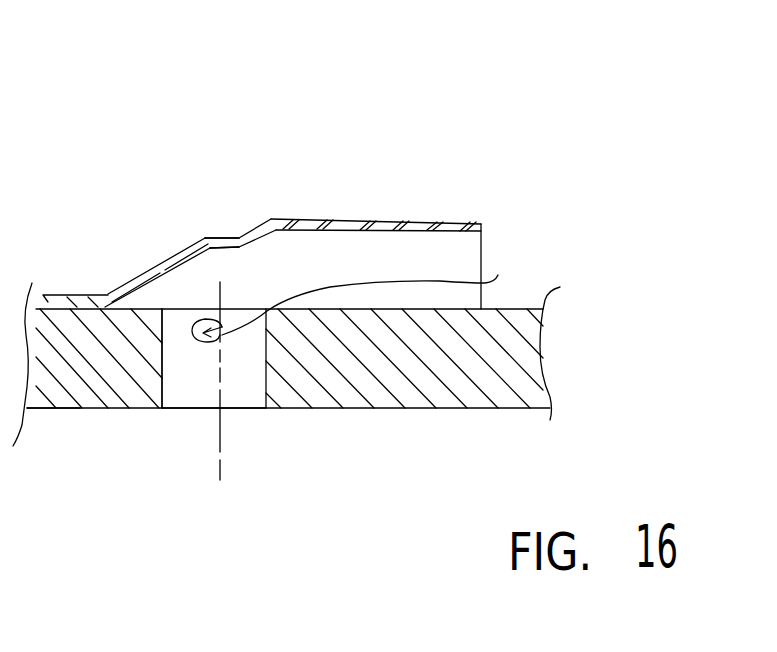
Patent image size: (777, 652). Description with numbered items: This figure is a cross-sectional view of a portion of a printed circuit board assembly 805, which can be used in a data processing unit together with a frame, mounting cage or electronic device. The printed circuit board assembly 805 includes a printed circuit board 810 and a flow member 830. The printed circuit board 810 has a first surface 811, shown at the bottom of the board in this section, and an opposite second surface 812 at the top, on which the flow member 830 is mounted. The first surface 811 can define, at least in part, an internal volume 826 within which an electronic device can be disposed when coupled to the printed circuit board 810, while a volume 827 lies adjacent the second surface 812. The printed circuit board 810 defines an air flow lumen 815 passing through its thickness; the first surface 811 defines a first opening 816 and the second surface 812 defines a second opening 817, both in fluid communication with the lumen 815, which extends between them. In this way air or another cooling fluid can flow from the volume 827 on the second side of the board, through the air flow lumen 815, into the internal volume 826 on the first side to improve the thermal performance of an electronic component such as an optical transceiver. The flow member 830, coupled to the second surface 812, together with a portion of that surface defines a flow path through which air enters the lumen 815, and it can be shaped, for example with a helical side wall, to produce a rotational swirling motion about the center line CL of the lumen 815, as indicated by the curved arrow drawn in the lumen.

The printed circuit board assembly 805 is at (161, 93).
The printed circuit board 810 is at (520, 348).
The first surface 811 is at (78, 408).
The second surface 812 is at (517, 307).
The air flow lumen 815 is at (204, 410).
The first opening 816 is at (176, 410).
The second opening 817 is at (238, 309).
The internal volume 826 is at (377, 531).
The volume 827 is at (490, 175).
The flow member 830 is at (321, 220).
The center line CL is at (220, 482).